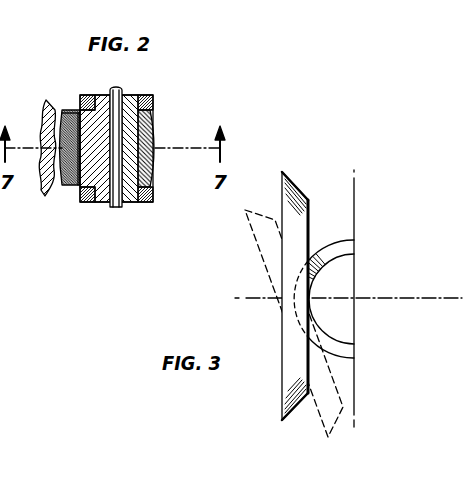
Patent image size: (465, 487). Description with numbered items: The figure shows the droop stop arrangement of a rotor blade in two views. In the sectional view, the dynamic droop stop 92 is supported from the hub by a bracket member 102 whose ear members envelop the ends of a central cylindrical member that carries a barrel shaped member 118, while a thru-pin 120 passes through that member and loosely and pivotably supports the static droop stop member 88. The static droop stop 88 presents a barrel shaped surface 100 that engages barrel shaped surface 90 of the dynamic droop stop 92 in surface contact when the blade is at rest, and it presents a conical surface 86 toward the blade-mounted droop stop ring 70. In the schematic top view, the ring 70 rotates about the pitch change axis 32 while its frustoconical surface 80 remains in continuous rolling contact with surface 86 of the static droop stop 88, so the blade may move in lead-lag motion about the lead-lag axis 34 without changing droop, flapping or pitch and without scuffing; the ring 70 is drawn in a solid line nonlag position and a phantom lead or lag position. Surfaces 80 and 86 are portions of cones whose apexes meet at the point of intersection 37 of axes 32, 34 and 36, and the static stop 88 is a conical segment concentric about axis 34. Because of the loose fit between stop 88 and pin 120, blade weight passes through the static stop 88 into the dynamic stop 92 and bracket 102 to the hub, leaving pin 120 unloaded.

In FIG. 3, the pitch change axis 32 is at (249, 297).
In FIG. 2, the lead-lag axis 34 is at (181, 147).
In FIG. 3, the lead-lag axis 34 is at (357, 297).
In FIG. 3, the axis 36 is at (358, 182).
In FIG. 3, the point of intersection 37 is at (357, 301).
In FIG. 2, the droop stop ring 70 is at (42, 118).
In FIG. 3, the droop stop ring 70 is at (253, 237).
In FIG. 2, the ring surface 80 is at (47, 195).
In FIG. 3, the ring surface 80 is at (296, 188).
In FIG. 2, the static droop stop surface 86 is at (63, 188).
In FIG. 3, the static droop stop surface 86 is at (340, 250).
In FIG. 2, the static droop stop member 88 is at (76, 186).
In FIG. 3, the static droop stop member 88 is at (353, 356).
In FIG. 2, the dynamic droop stop surface 90 is at (65, 111).
In FIG. 2, the dynamic droop stop 92 is at (156, 122).
In FIG. 2, the static droop stop surface 100 is at (84, 118).
In FIG. 2, the bracket member 102 is at (153, 100).
In FIG. 2, the barrel shaped member 118 is at (157, 160).
In FIG. 2, the thru-pin 120 is at (117, 90).